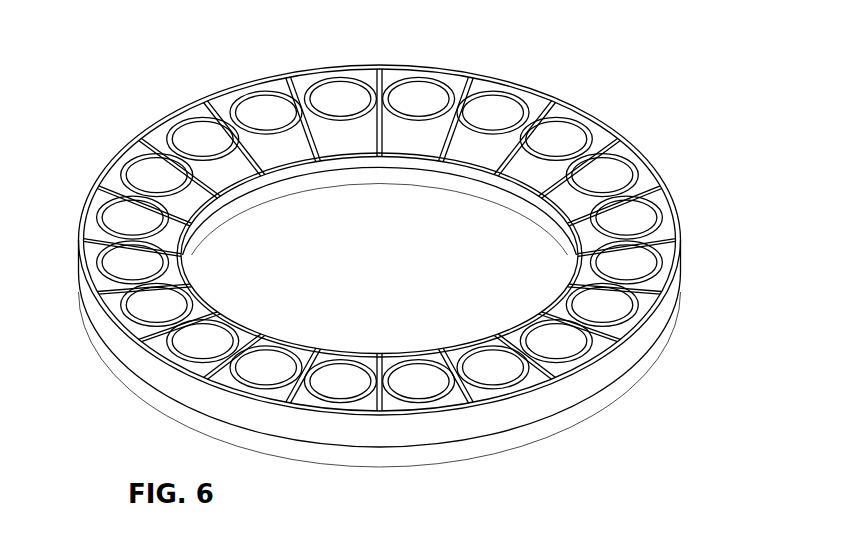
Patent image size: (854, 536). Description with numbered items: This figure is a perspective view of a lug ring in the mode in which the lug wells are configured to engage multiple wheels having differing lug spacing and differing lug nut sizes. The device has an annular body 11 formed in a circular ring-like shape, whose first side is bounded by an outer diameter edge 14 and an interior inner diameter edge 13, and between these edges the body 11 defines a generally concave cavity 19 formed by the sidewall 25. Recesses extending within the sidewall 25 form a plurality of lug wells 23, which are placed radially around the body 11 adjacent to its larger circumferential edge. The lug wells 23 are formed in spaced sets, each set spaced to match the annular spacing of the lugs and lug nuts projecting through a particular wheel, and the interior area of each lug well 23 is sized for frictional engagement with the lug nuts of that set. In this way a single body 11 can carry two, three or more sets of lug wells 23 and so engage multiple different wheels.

The annular body 11 is at (379, 249).
The interior inner diameter edge 13 is at (313, 130).
The outer diameter edge 14 is at (205, 95).
The cavity 19 is at (370, 217).
The lug wells 23 is at (420, 92).
The sidewall 25 is at (515, 126).